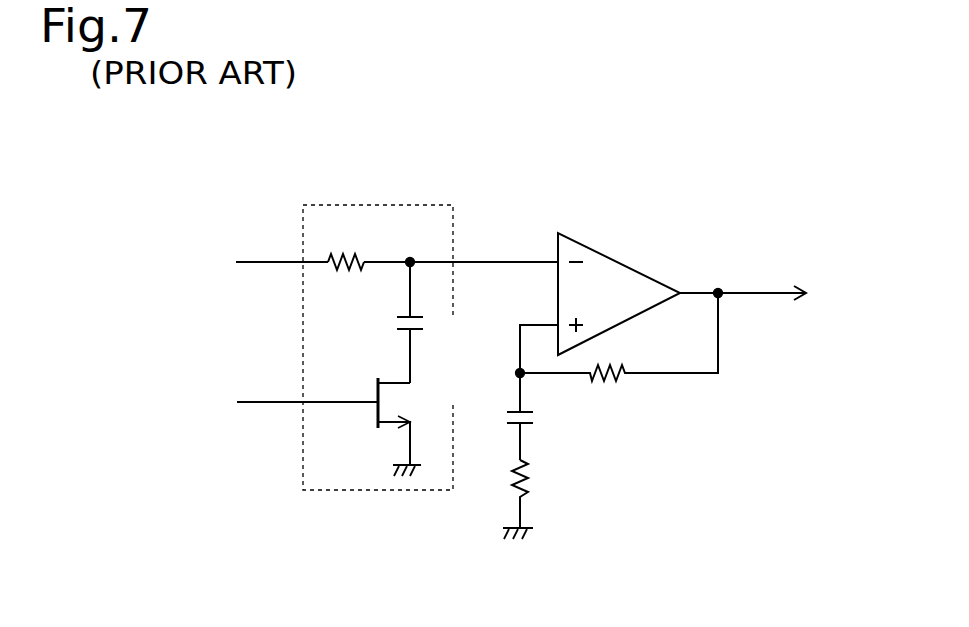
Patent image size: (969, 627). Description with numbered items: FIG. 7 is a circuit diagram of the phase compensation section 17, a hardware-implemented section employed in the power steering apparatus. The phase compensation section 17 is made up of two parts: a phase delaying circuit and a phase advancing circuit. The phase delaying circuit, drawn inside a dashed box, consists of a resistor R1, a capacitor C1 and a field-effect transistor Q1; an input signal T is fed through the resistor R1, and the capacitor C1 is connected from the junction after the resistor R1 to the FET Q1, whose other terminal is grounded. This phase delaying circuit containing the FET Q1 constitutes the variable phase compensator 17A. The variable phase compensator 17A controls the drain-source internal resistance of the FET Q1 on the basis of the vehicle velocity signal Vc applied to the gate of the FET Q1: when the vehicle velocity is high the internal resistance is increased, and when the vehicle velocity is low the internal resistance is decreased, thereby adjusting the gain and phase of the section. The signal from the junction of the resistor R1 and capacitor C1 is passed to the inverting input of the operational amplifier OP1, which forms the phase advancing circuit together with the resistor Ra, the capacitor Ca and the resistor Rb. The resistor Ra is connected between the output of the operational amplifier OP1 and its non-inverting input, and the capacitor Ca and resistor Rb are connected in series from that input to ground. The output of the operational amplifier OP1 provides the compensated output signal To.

The phase compensation section 17 is at (492, 178).
The variable phase compensator 17A is at (338, 492).
The resistor R1 is at (346, 243).
The capacitor C1 is at (392, 322).
The FET Q1 is at (378, 427).
The operational amplifier OP1 is at (625, 282).
The resistor Ra is at (619, 353).
The capacitor Ca is at (536, 416).
The resistor Rb is at (535, 499).
The input terminal T is at (270, 261).
The vehicle velocity signal Vc is at (286, 401).
The output terminal To is at (782, 294).